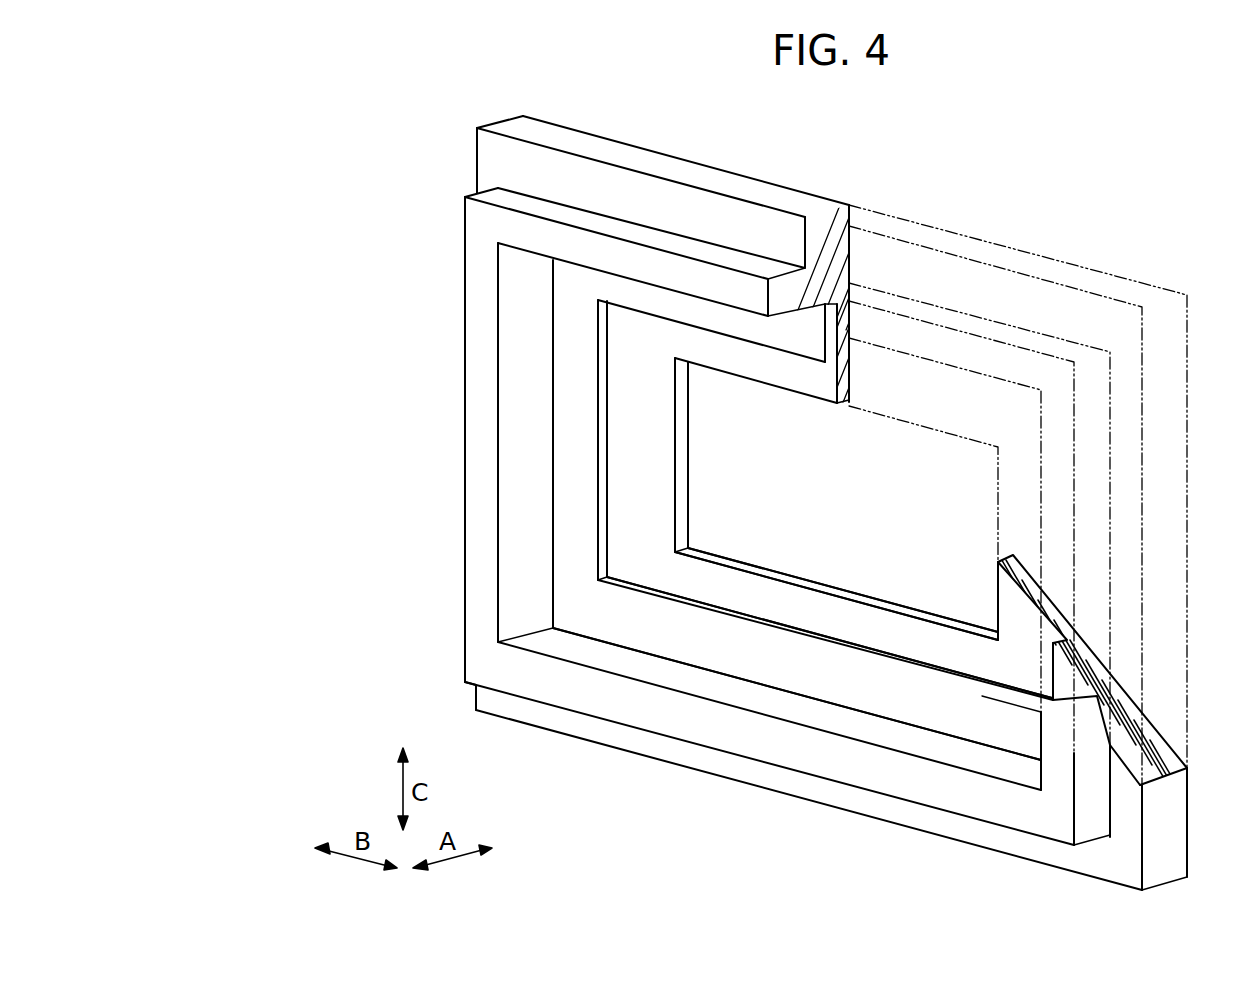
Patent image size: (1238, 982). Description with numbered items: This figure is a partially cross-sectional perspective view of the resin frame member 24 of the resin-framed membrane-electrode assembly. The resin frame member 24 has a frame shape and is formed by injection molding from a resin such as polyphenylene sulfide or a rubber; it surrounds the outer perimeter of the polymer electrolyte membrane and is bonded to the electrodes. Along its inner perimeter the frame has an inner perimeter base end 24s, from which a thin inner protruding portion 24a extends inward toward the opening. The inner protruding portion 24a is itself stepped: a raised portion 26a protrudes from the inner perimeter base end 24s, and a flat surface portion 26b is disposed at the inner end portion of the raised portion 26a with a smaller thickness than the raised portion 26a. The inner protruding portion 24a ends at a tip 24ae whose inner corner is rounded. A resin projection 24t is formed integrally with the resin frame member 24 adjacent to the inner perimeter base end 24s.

The resin frame member 24 is at (972, 136).
The resin projection 24t is at (745, 287).
The inner perimeter base end 24s is at (518, 463).
The inner protruding portion 24a is at (827, 605).
The tip of the inner protruding portion 24ae is at (783, 580).
The raised portion 26a is at (970, 693).
The flat surface portion 26b is at (903, 630).